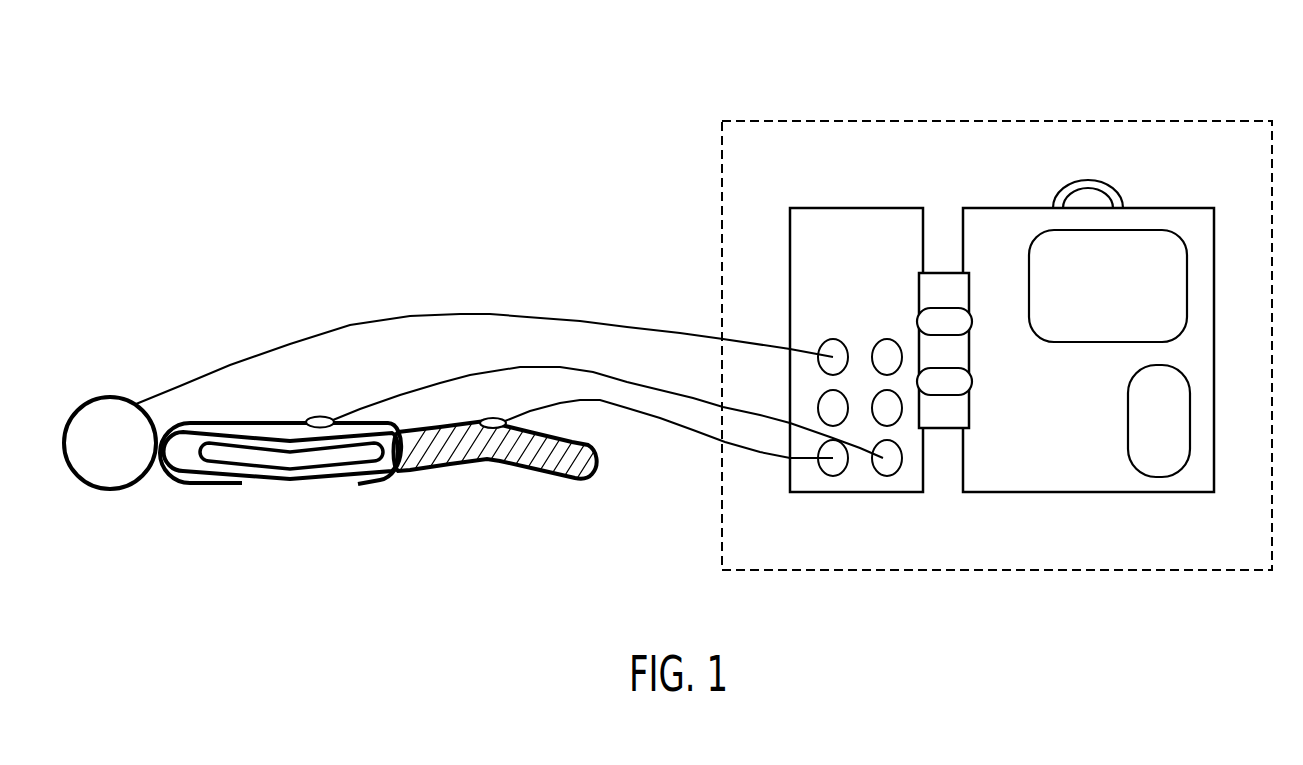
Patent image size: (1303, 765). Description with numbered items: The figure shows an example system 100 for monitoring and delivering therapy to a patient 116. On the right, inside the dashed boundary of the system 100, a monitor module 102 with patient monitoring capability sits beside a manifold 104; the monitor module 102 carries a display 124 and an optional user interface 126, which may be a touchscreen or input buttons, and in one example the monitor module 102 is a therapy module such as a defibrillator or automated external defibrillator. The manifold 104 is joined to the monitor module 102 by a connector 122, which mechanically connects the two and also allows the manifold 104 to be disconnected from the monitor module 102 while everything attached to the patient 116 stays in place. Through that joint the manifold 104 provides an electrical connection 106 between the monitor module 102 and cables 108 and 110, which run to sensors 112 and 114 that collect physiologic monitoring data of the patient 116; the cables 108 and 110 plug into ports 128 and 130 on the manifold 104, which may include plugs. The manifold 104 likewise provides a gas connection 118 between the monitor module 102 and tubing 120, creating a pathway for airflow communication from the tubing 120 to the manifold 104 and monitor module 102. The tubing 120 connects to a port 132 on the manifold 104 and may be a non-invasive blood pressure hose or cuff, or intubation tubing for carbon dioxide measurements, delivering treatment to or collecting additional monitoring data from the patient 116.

The system 100 is at (790, 120).
The monitor module 102 is at (1027, 207).
The manifold 104 is at (858, 207).
The electrical connection 106 is at (963, 322).
The cable 108 is at (397, 396).
The cable 110 is at (588, 400).
The sensor 112 is at (327, 417).
The sensor 114 is at (482, 420).
The patient 116 is at (600, 458).
The gas connection 118 is at (963, 382).
The tubing 120 is at (528, 317).
The connector 122 is at (946, 243).
The display 124 is at (1187, 277).
The user interface 126 is at (1190, 415).
The port 128 is at (830, 476).
The port 130 is at (883, 476).
The port 132 is at (836, 338).